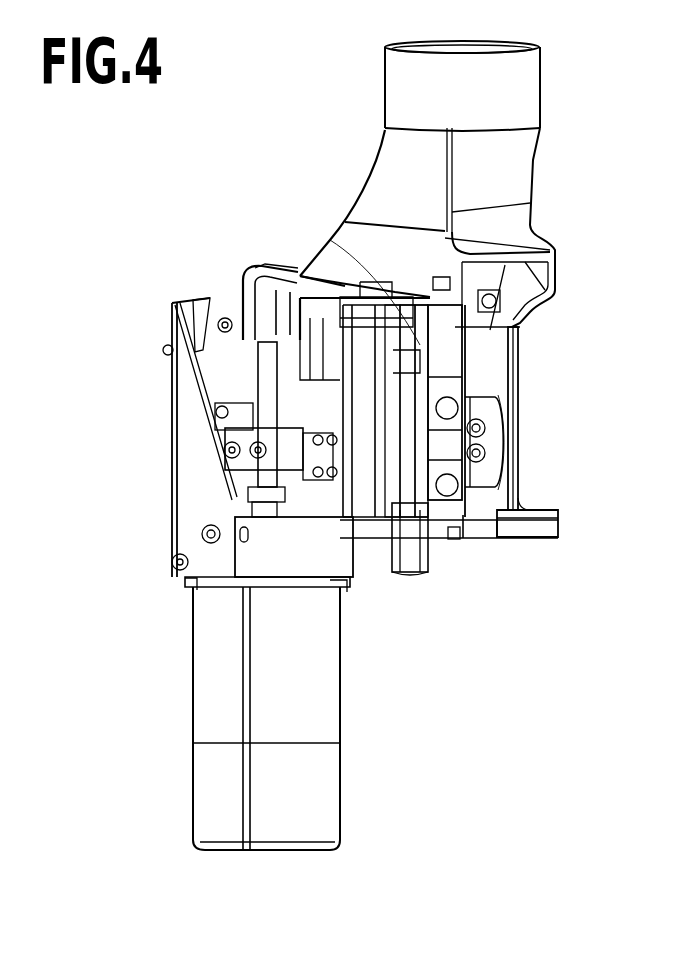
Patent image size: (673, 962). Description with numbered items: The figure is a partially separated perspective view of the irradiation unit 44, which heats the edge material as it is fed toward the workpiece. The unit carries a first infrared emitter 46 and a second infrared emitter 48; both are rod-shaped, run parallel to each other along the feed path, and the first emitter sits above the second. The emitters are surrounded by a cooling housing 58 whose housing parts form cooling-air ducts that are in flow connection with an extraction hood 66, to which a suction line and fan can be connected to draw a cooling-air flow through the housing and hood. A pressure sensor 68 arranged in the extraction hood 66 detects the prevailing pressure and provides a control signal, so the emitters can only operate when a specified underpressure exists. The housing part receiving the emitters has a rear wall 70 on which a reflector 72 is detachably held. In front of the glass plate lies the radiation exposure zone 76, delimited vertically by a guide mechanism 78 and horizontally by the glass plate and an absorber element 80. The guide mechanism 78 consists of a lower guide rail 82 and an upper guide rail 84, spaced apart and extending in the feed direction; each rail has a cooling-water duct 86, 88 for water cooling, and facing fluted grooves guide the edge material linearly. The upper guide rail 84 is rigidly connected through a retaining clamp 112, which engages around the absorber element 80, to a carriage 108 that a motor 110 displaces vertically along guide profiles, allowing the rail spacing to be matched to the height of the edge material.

The irradiation unit 44 is at (338, 160).
The extraction hood 66 is at (533, 137).
The pressure sensor 68 is at (500, 298).
The cooling housing 58 is at (537, 372).
The first infrared emitter 46 is at (517, 423).
The rear wall 70 is at (486, 445).
The second infrared emitter 48 is at (490, 458).
The reflector 72 is at (538, 520).
The lower guide rail 82 is at (455, 515).
The cooling-water duct 86 is at (443, 500).
The upper guide rail 84 is at (448, 392).
The cooling-water duct 88 is at (297, 270).
The retaining clamp 112 is at (260, 295).
The carriage 108 is at (228, 418).
The absorber element 80 is at (392, 420).
The radiation exposure zone 76 is at (402, 447).
The guide mechanism 78 is at (392, 473).
The motor 110 is at (212, 665).